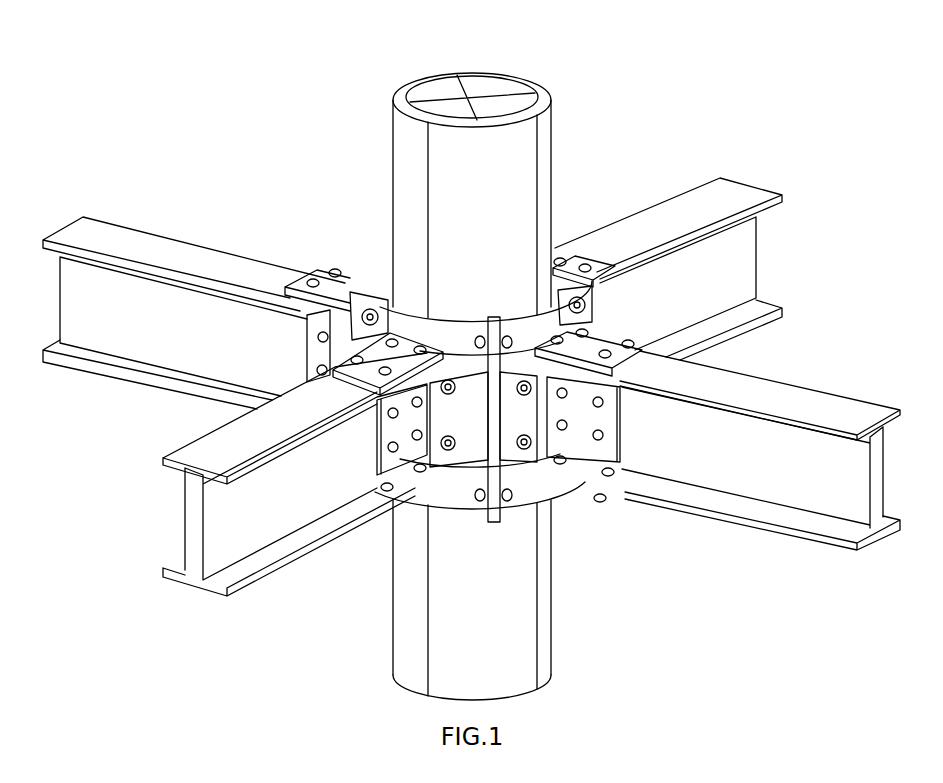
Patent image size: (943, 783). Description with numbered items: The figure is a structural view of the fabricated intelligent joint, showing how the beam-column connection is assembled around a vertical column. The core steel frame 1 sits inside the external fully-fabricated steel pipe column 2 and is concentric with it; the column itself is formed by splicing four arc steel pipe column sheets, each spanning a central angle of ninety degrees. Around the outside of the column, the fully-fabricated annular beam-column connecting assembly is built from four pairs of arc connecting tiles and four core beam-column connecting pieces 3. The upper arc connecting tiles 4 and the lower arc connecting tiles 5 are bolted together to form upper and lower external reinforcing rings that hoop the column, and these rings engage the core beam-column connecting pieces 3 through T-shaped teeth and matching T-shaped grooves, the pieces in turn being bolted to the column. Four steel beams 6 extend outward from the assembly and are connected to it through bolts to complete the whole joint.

The core steel frame 1 is at (530, 93).
The external fully-fabricated steel pipe column 2 is at (493, 210).
The core beam-column connecting piece 3 is at (503, 410).
The upper arc connecting tile 4 is at (413, 328).
The lower arc connecting tile 5 is at (525, 480).
The steel beam 6 is at (693, 422).